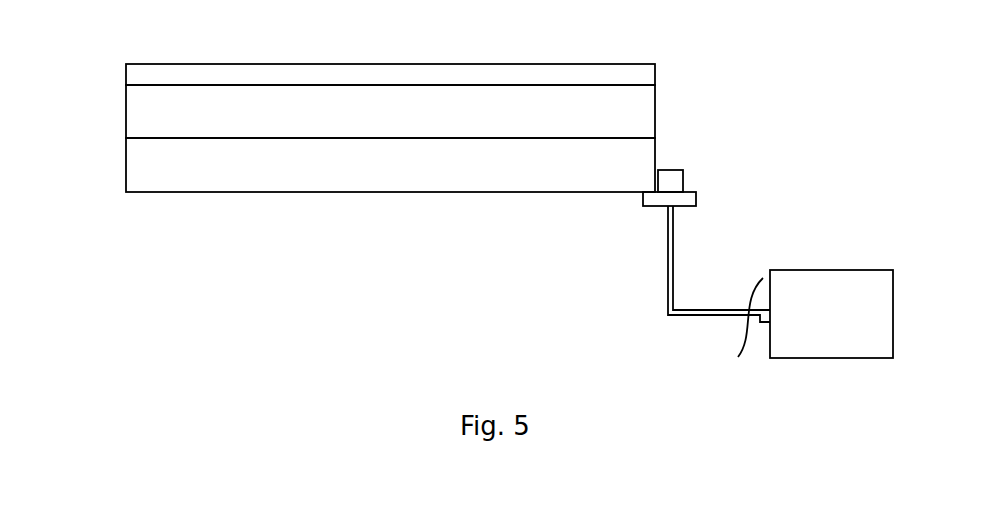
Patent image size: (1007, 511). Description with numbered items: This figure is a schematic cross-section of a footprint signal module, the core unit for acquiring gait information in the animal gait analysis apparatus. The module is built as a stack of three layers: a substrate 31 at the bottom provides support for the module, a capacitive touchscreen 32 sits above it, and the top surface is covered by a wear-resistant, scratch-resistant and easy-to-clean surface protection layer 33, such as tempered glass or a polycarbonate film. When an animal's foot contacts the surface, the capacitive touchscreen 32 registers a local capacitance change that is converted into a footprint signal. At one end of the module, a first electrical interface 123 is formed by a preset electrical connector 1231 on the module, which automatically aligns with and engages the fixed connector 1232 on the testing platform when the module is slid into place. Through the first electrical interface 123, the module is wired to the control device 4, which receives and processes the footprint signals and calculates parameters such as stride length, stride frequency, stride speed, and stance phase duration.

The substrate 31 is at (162, 182).
The capacitive touchscreen 32 is at (163, 123).
The surface protection layer 33 is at (150, 72).
The first electrical interface 123 is at (720, 199).
The preset electrical connector 1231 is at (670, 181).
The fixed connector 1232 is at (682, 189).
The control device 4 is at (882, 317).